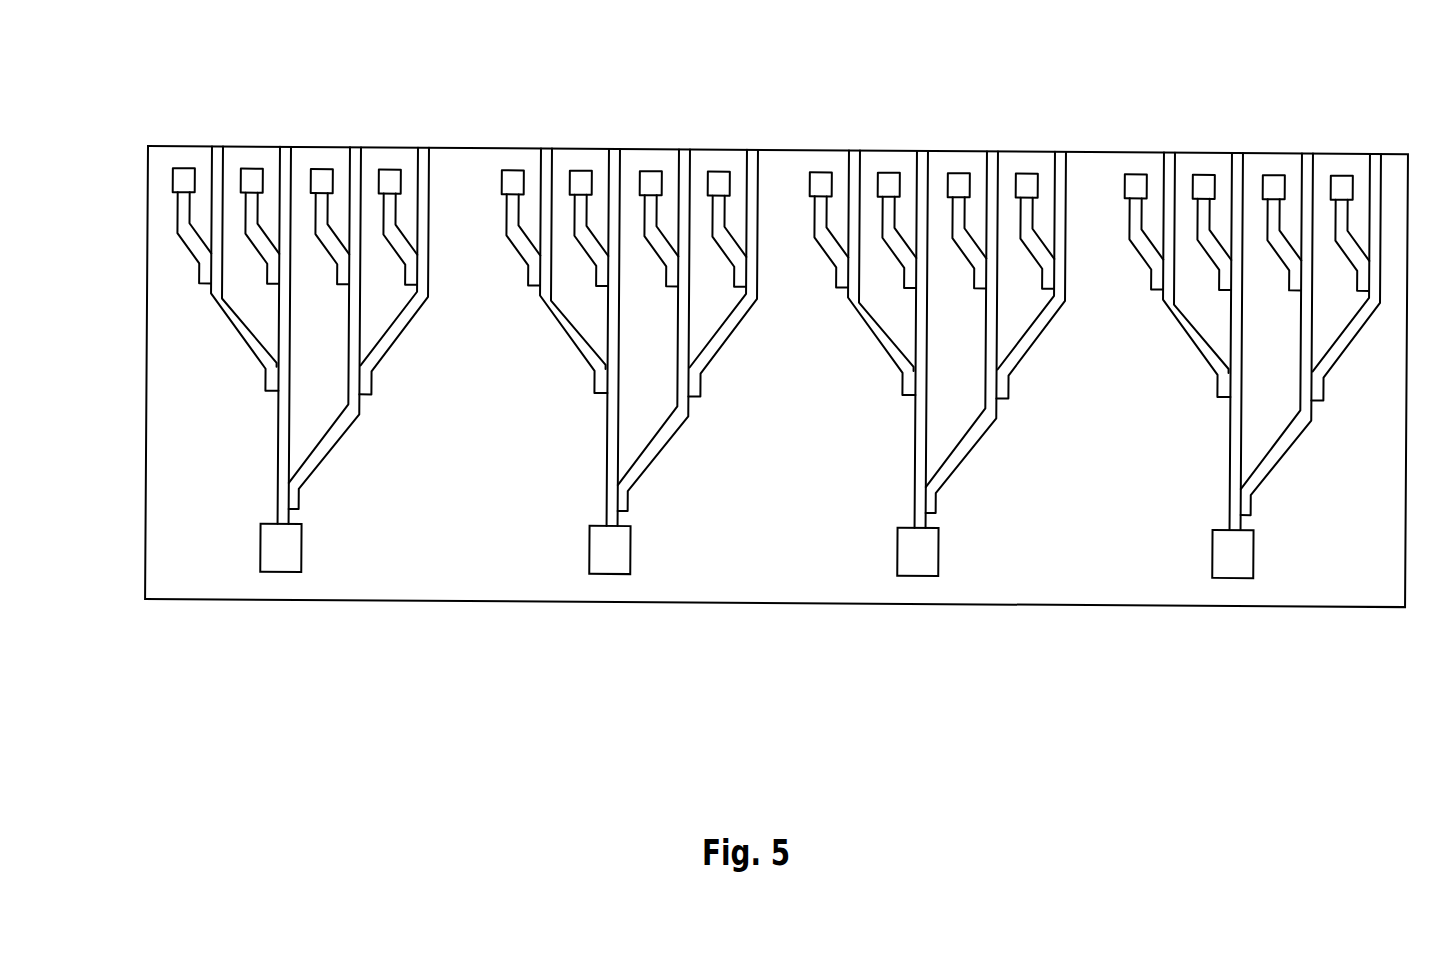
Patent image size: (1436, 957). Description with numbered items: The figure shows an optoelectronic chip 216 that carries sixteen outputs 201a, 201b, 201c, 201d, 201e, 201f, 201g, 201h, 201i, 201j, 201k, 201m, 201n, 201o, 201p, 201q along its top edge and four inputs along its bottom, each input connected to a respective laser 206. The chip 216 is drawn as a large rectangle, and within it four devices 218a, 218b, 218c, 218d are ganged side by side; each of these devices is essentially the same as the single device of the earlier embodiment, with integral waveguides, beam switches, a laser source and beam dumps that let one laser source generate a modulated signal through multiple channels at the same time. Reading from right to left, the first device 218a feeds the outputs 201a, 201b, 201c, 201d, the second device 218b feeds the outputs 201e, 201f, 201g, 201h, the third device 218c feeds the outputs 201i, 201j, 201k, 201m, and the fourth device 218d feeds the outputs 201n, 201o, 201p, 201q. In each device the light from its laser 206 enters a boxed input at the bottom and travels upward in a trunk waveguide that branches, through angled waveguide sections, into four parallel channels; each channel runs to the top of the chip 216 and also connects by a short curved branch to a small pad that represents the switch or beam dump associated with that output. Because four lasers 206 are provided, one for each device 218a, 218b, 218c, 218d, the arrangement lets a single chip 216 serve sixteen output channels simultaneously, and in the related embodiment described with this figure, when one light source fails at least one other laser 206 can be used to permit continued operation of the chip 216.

The output 201a is at (1353, 215).
The output 201b is at (1284, 272).
The output 201c is at (1224, 280).
The output 201d is at (1177, 212).
The output 201e is at (1038, 213).
The output 201f is at (969, 271).
The output 201g is at (909, 277).
The output 201h is at (862, 210).
The output 201i is at (730, 213).
The output 201j is at (661, 270).
The output 201k is at (601, 275).
The output 201m is at (554, 207).
The output 201n is at (423, 146).
The output 201o is at (355, 146).
The output 201p is at (285, 146).
The output 201q is at (217, 146).
The laser 206 is at (273, 527).
The chip 216 is at (1350, 576).
The device 218a is at (1259, 279).
The device 218b is at (944, 277).
The device 218c is at (636, 274).
The device 218d is at (245, 468).